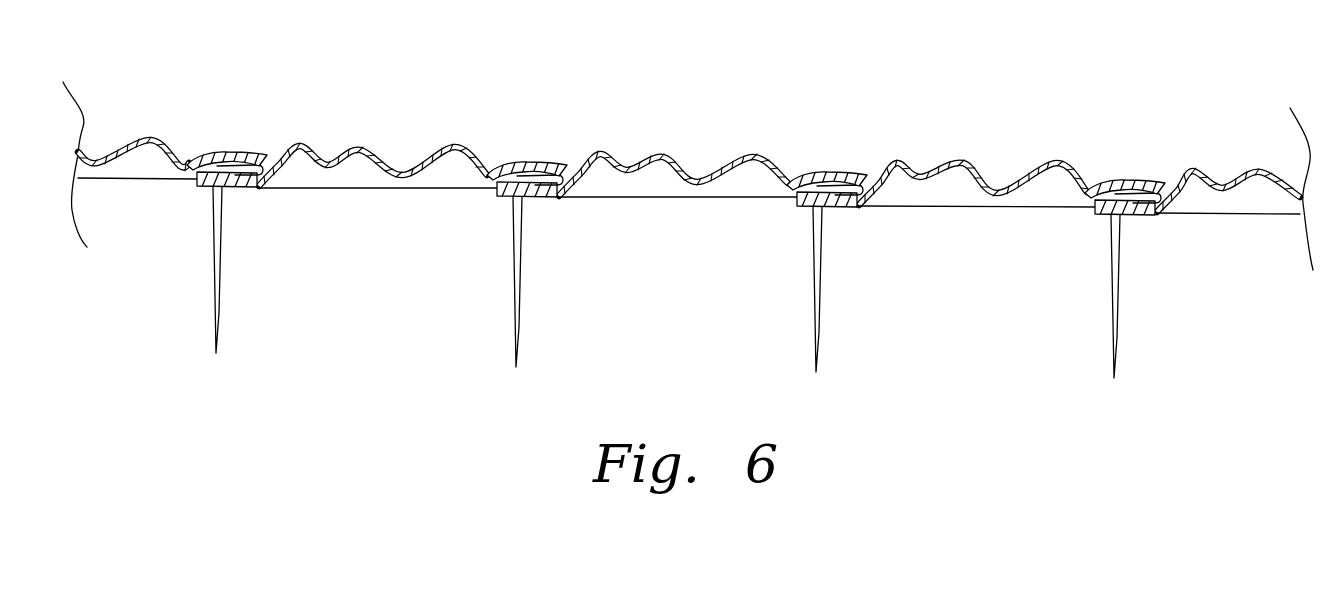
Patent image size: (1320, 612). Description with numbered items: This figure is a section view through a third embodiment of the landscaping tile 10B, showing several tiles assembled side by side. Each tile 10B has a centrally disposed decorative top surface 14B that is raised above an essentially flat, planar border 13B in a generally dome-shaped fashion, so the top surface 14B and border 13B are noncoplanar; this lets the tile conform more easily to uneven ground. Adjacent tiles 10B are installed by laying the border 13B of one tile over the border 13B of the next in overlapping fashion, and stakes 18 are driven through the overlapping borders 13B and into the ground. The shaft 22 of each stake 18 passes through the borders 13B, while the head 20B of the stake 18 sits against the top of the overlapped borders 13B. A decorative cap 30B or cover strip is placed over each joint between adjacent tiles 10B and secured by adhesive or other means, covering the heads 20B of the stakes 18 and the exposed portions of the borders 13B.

The landscaping tile 10B is at (688, 206).
The decorative top surface 14B is at (363, 147).
The border 13B is at (233, 190).
The decorative cap 30B is at (223, 152).
The stake 18 is at (506, 282).
The shaft 22 is at (518, 290).
The head 20B is at (858, 206).